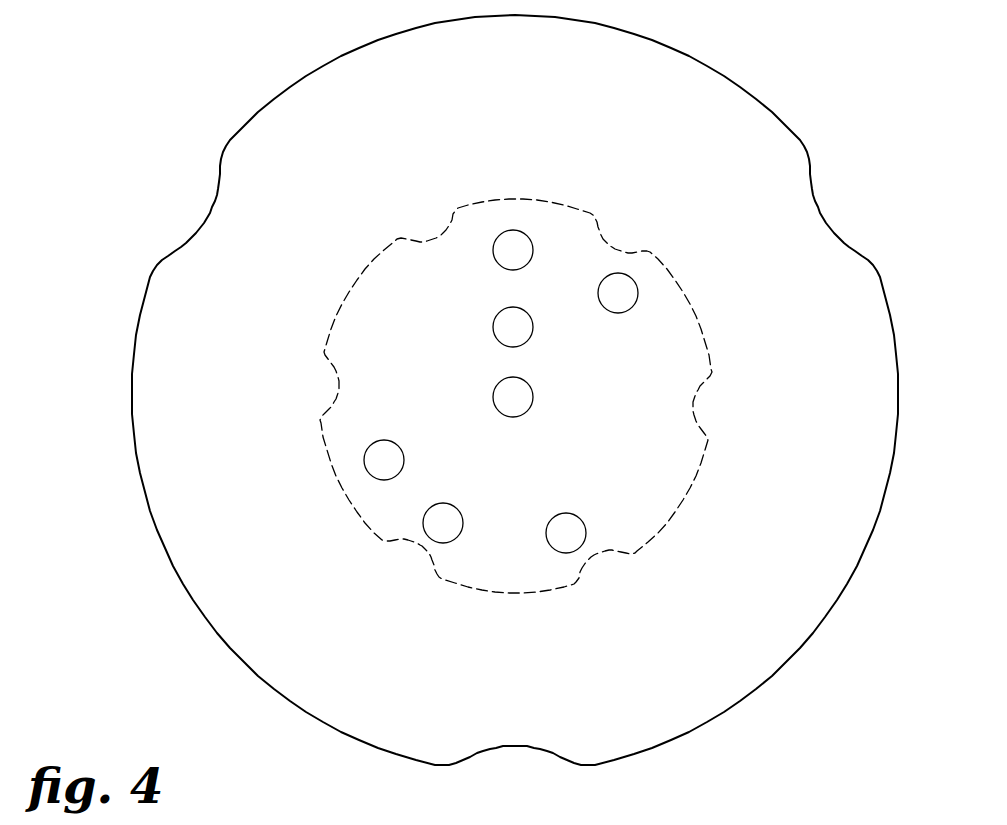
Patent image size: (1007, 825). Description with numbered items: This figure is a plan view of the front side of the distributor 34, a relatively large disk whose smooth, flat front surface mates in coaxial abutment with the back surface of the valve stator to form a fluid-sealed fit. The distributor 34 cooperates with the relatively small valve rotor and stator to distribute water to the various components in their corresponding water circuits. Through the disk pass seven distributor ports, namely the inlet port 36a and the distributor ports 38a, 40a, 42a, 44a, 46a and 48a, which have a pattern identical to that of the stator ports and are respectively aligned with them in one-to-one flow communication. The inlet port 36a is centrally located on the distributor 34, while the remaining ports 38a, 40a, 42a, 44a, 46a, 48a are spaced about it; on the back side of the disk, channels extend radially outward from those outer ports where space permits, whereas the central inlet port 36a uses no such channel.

The distributor 34 is at (515, 390).
The inlet port 36a is at (570, 397).
The distributor port 38a is at (464, 254).
The distributor port 40a is at (484, 516).
The distributor port 42a is at (585, 293).
The distributor port 44a is at (418, 441).
The distributor port 46a is at (606, 515).
The distributor port 48a is at (570, 329).